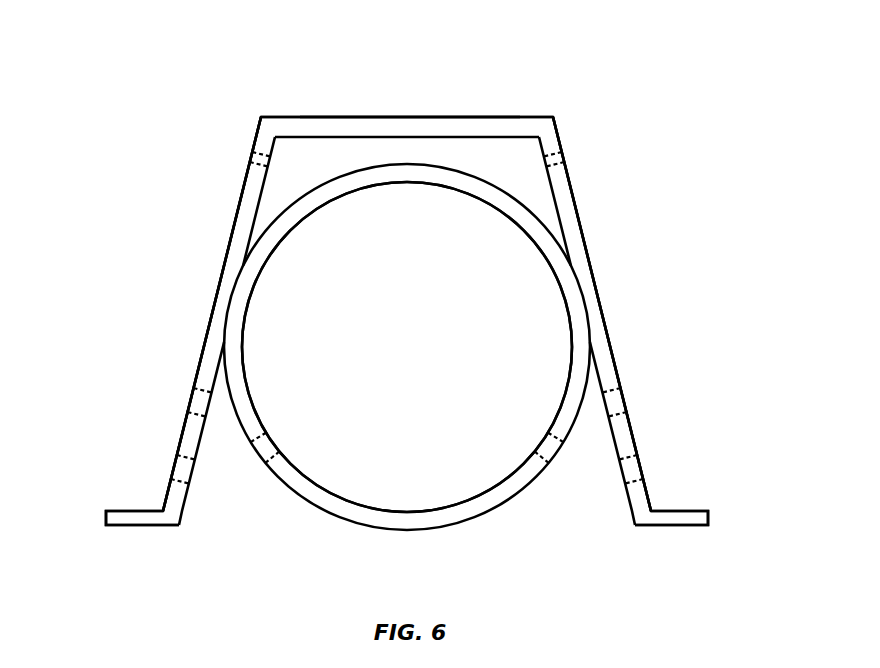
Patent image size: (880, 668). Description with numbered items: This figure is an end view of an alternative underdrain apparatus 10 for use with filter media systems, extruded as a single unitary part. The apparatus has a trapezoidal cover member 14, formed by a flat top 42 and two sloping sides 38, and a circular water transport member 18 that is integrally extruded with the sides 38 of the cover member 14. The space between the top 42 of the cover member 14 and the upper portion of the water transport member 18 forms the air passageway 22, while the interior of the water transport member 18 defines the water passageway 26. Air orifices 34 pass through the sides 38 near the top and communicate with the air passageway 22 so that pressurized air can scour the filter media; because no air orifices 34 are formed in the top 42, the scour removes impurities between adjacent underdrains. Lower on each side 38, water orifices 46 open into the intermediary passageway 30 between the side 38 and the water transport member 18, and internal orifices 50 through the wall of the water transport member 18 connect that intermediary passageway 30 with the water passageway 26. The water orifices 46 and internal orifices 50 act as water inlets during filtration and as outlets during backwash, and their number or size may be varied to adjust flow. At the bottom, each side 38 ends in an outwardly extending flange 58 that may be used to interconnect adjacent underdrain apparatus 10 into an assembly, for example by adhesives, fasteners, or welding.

The underdrain apparatus 10 is at (556, 64).
The cover member 14 is at (290, 113).
The top 42 is at (404, 117).
The air passageway 22 is at (394, 163).
The water transport member 18 is at (295, 236).
The water passageway 26 is at (394, 361).
The intermediary passageway 30 is at (214, 488).
The sides 38 is at (237, 217).
The air orifices 34 is at (253, 159).
The water orifices 46 is at (196, 395).
The internal orifices 50 is at (275, 445).
The flanges 58 is at (128, 511).